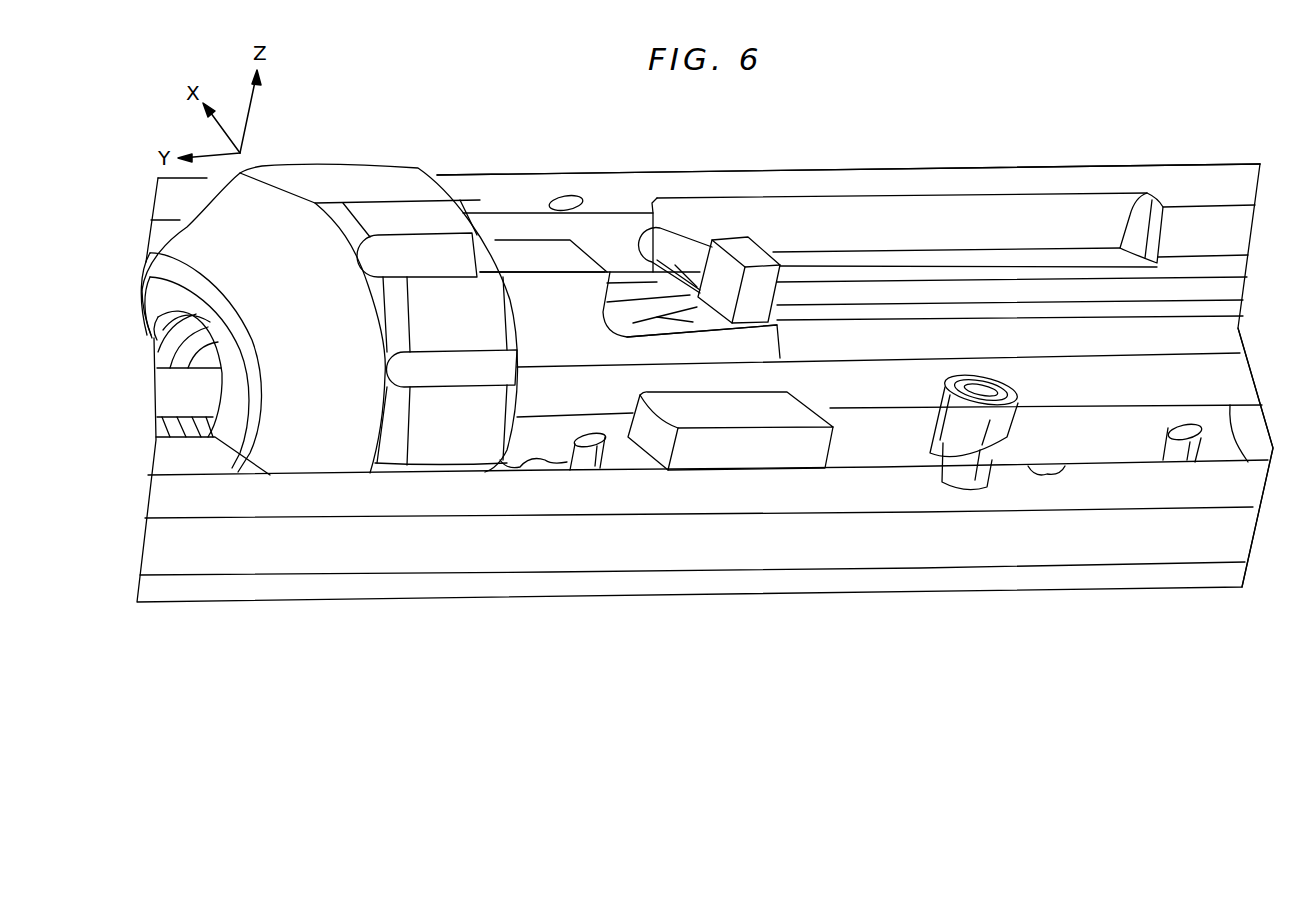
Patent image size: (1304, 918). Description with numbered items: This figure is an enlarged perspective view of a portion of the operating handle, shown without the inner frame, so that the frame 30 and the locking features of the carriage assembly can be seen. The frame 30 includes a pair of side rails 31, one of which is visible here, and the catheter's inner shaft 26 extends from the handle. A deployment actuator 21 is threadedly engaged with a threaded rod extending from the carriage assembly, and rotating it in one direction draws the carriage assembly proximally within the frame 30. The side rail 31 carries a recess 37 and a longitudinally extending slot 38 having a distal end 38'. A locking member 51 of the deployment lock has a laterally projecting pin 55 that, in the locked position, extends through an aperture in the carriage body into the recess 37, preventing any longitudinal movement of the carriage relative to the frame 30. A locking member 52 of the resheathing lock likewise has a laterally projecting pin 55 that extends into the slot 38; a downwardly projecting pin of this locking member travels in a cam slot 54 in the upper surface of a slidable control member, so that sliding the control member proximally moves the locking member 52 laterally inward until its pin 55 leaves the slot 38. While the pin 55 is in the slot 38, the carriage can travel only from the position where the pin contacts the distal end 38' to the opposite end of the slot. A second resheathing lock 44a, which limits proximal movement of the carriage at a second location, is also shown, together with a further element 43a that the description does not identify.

The deployment actuator 21 is at (322, 165).
The inner shaft 26 is at (1240, 463).
The frame 30 is at (1200, 165).
The side rails 31 is at (1098, 162).
The recess 37 is at (1037, 480).
The slot 38 is at (902, 190).
The distal end of slot 38' is at (662, 201).
The block 43a is at (728, 453).
The second resheathing lock 44a is at (540, 250).
The locking member 51 is at (932, 470).
The locking member 52 is at (740, 232).
The cam slot 54 is at (657, 315).
The laterally projecting pin 55 is at (683, 245).